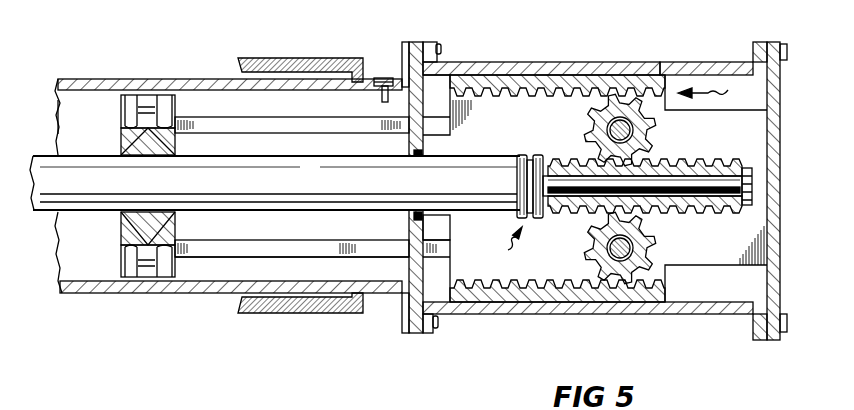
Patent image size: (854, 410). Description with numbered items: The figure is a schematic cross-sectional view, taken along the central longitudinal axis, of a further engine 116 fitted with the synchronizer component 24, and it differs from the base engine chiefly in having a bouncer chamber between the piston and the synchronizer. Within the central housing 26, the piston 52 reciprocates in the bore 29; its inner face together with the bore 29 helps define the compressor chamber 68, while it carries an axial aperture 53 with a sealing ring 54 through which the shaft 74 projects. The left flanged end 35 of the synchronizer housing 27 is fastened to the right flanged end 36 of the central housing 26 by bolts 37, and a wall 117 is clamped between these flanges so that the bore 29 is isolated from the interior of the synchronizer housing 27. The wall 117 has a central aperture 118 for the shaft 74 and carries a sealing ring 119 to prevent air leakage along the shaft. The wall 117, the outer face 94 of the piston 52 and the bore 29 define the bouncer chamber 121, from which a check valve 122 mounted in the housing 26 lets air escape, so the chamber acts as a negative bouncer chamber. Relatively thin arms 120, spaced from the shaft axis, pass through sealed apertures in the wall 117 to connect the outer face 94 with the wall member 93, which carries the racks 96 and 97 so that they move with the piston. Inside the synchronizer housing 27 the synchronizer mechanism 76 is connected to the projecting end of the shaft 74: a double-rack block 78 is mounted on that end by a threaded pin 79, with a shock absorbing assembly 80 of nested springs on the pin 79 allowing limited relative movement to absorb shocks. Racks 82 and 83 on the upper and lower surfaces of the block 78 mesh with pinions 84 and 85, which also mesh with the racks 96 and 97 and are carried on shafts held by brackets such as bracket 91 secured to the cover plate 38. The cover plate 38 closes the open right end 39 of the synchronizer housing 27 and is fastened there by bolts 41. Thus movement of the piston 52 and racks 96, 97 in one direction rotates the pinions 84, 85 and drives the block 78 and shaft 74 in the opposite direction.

The engine 116 is at (126, 60).
The bore 29 is at (213, 277).
The compressor chamber 68 is at (58, 112).
The shaft 74 is at (378, 185).
The outer face of the piston 94 is at (174, 99).
The axial aperture 53 is at (125, 160).
The sealing ring 54 is at (143, 218).
The piston 52 is at (145, 277).
The arms 120 is at (226, 125).
The bouncer chamber 121 is at (393, 280).
The central housing 26 is at (312, 327).
The check valve 122 is at (385, 78).
The left flanged end of the synchronizer housing 35 is at (427, 42).
The right flanged end of the central housing 36 is at (408, 335).
The bolts 37 is at (437, 322).
The wall 117 is at (425, 232).
The sealing ring 119 is at (410, 227).
The central aperture 118 is at (424, 163).
The synchronizer component 24 is at (565, 44).
The synchronizer housing 27 is at (716, 43).
The cover plate 38 is at (785, 75).
The open right end of the synchronizer housing 39 is at (758, 342).
The bolts 41 is at (786, 50).
The rack 96 is at (489, 80).
The rack 97 is at (528, 297).
The wall member 93 is at (527, 131).
The bracket 91 is at (750, 264).
The synchronizer mechanism 76 is at (717, 93).
The shock absorbing assembly 80 is at (504, 248).
The pinion 84 is at (587, 117).
The pinion 85 is at (588, 233).
The rack 82 is at (683, 159).
The rack 83 is at (702, 214).
The double-rack block 78 is at (716, 173).
The threaded pin 79 is at (752, 173).